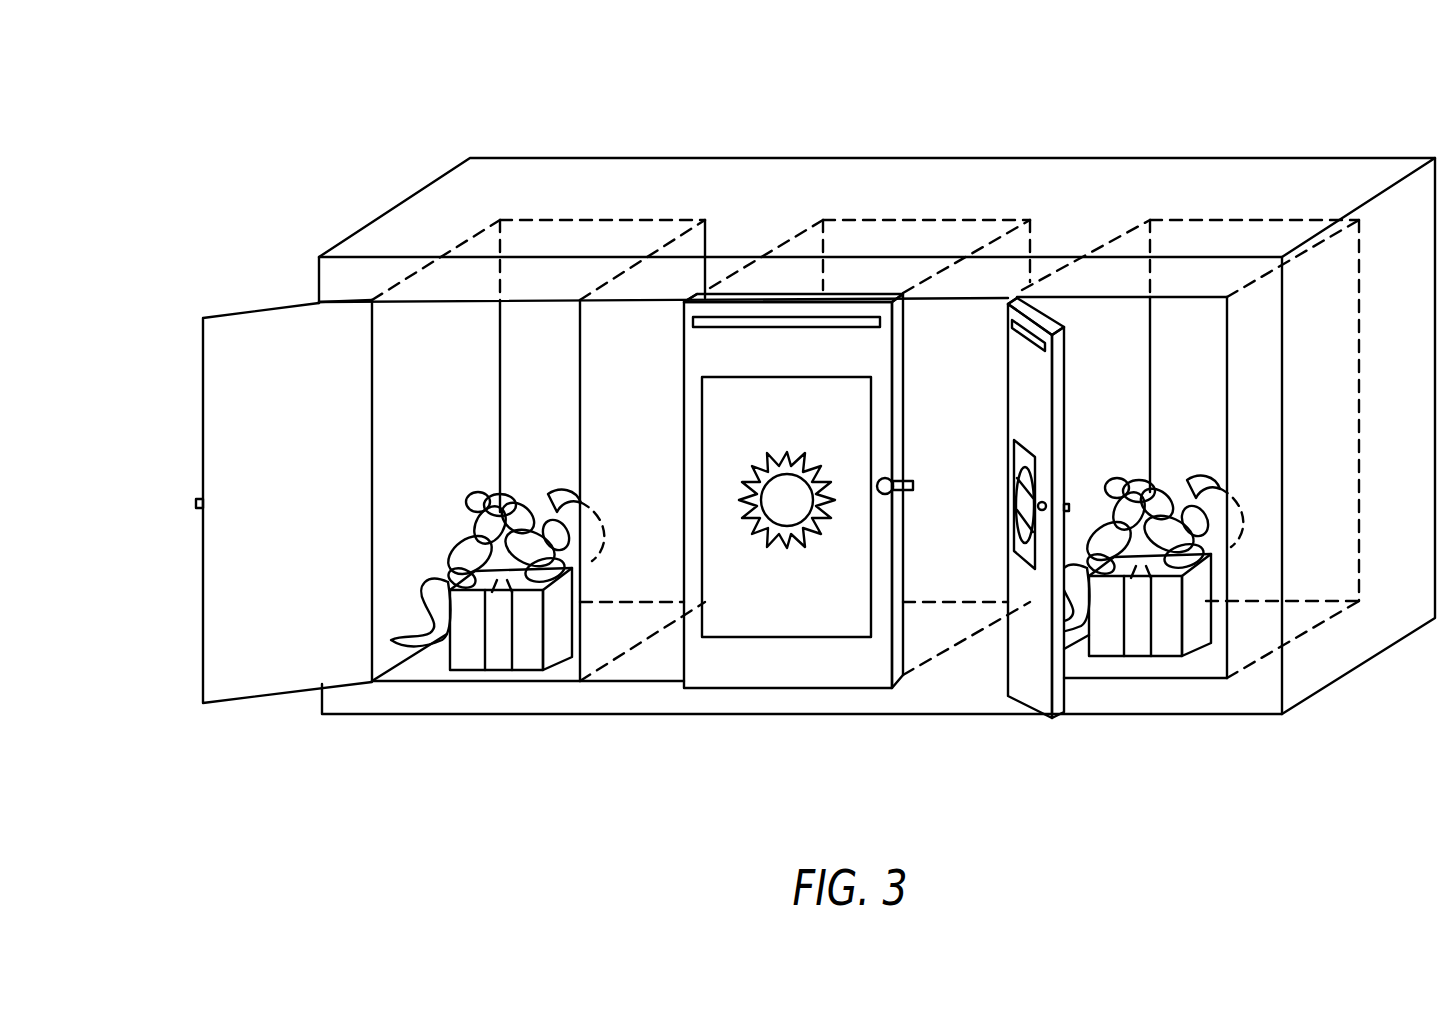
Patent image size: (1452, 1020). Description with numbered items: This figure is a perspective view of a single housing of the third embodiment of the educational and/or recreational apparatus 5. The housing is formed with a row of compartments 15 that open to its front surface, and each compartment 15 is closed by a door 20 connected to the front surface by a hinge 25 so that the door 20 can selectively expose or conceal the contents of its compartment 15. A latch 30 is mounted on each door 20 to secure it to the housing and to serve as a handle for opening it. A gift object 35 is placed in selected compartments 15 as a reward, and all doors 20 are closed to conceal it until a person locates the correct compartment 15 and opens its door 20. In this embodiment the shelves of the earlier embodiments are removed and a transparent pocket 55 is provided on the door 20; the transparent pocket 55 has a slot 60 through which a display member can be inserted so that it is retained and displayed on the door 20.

The educational and/or recreational apparatus 5 is at (896, 90).
The compartment 15 is at (547, 313).
The door 20 is at (270, 677).
The hinge 25 is at (371, 300).
The latch 30 is at (196, 504).
The gift object 35 is at (557, 670).
The transparent pocket 55 is at (745, 680).
The slot 60 is at (758, 318).